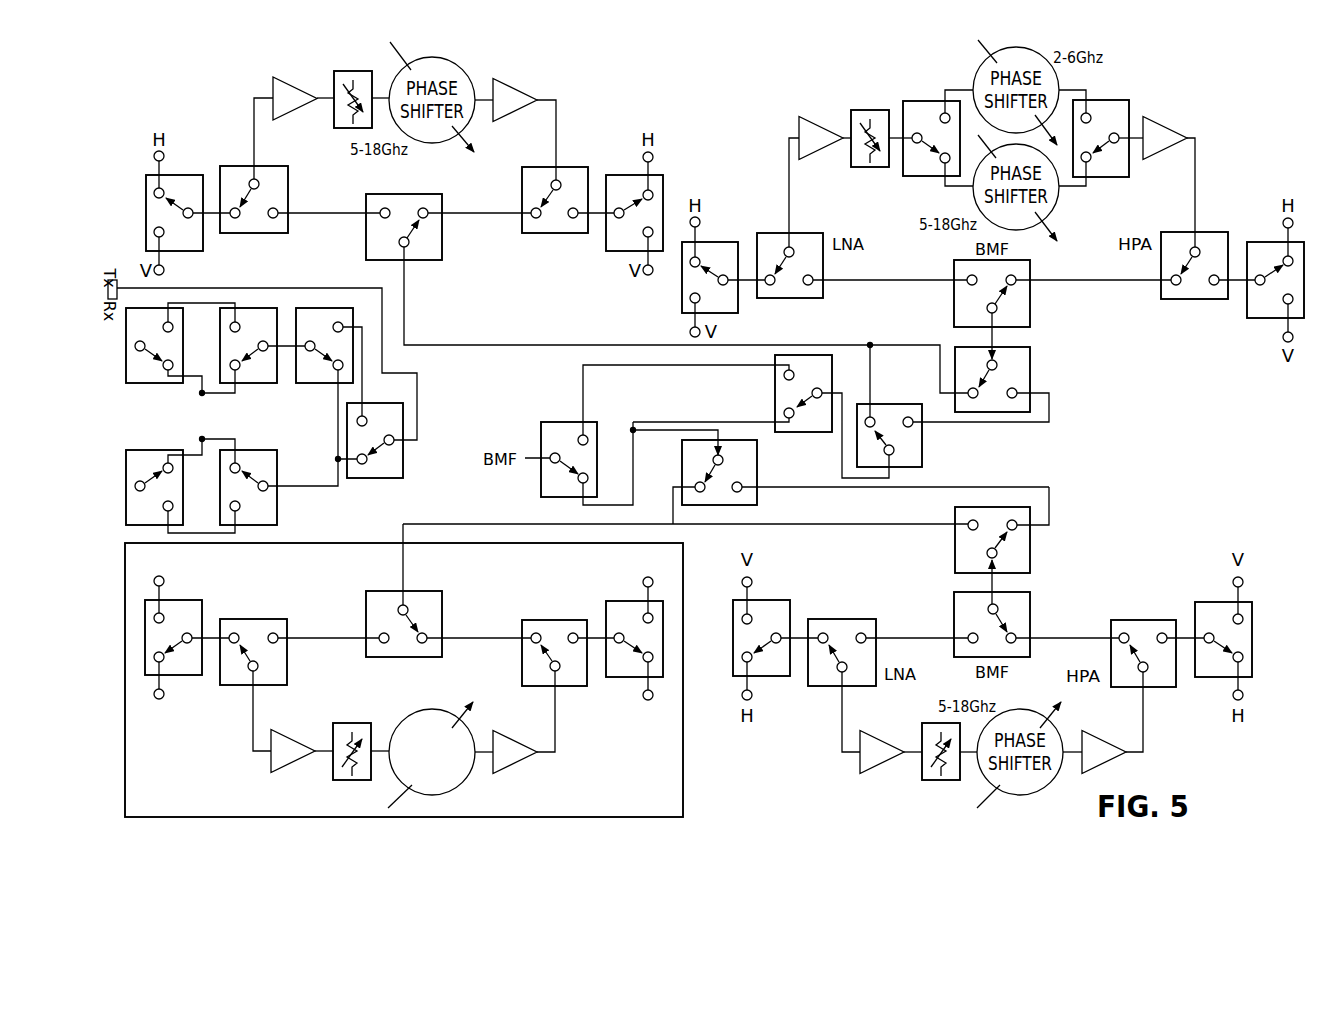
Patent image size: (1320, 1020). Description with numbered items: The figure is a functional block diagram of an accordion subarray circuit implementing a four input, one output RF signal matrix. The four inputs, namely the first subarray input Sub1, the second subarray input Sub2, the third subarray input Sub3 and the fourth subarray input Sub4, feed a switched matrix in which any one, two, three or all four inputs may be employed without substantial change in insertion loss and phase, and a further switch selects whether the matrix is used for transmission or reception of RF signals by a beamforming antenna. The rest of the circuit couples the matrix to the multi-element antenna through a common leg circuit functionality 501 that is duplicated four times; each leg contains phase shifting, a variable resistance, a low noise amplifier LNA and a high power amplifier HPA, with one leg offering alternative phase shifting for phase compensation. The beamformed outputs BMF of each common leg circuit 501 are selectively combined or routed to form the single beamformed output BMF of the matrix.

The common leg circuit functionality 501 is at (687, 757).
The low noise amplifier LNA is at (274, 199).
The beamformed output BMF is at (404, 216).
The high power amplifier HPA is at (533, 200).
The first subarray input Sub1 is at (135, 486).
The second subarray input Sub2 is at (202, 439).
The third subarray input Sub3 is at (202, 393).
The fourth subarray input Sub4 is at (135, 346).